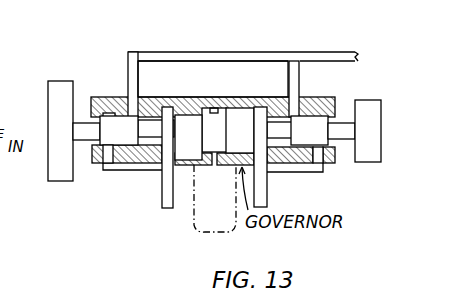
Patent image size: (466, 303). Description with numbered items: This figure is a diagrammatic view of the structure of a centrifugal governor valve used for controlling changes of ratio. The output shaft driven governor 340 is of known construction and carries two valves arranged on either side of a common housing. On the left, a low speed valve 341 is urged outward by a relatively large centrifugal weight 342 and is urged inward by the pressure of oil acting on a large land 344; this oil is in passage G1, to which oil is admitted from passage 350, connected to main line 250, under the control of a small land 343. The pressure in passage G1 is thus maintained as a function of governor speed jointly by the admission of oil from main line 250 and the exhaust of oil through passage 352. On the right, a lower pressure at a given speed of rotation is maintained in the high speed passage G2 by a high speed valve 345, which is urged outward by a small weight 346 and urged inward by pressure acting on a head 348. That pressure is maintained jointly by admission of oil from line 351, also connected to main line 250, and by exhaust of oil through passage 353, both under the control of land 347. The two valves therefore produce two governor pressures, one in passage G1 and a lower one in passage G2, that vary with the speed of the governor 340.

The main line 250 is at (316, 58).
The passage 350 is at (134, 67).
The line 351 is at (293, 77).
The output shaft driven governor 340 is at (219, 96).
The low speed valve 341 is at (81, 131).
The centrifugal weight 342 is at (50, 108).
The small land 343 is at (122, 130).
The large land 344 is at (188, 137).
The head 348 is at (240, 130).
The land 347 is at (315, 117).
The high speed valve 345 is at (343, 140).
The small weight 346 is at (370, 112).
The passage 352 is at (147, 167).
The passage 353 is at (305, 175).
The passage G1 is at (165, 198).
The high speed passage G2 is at (267, 200).